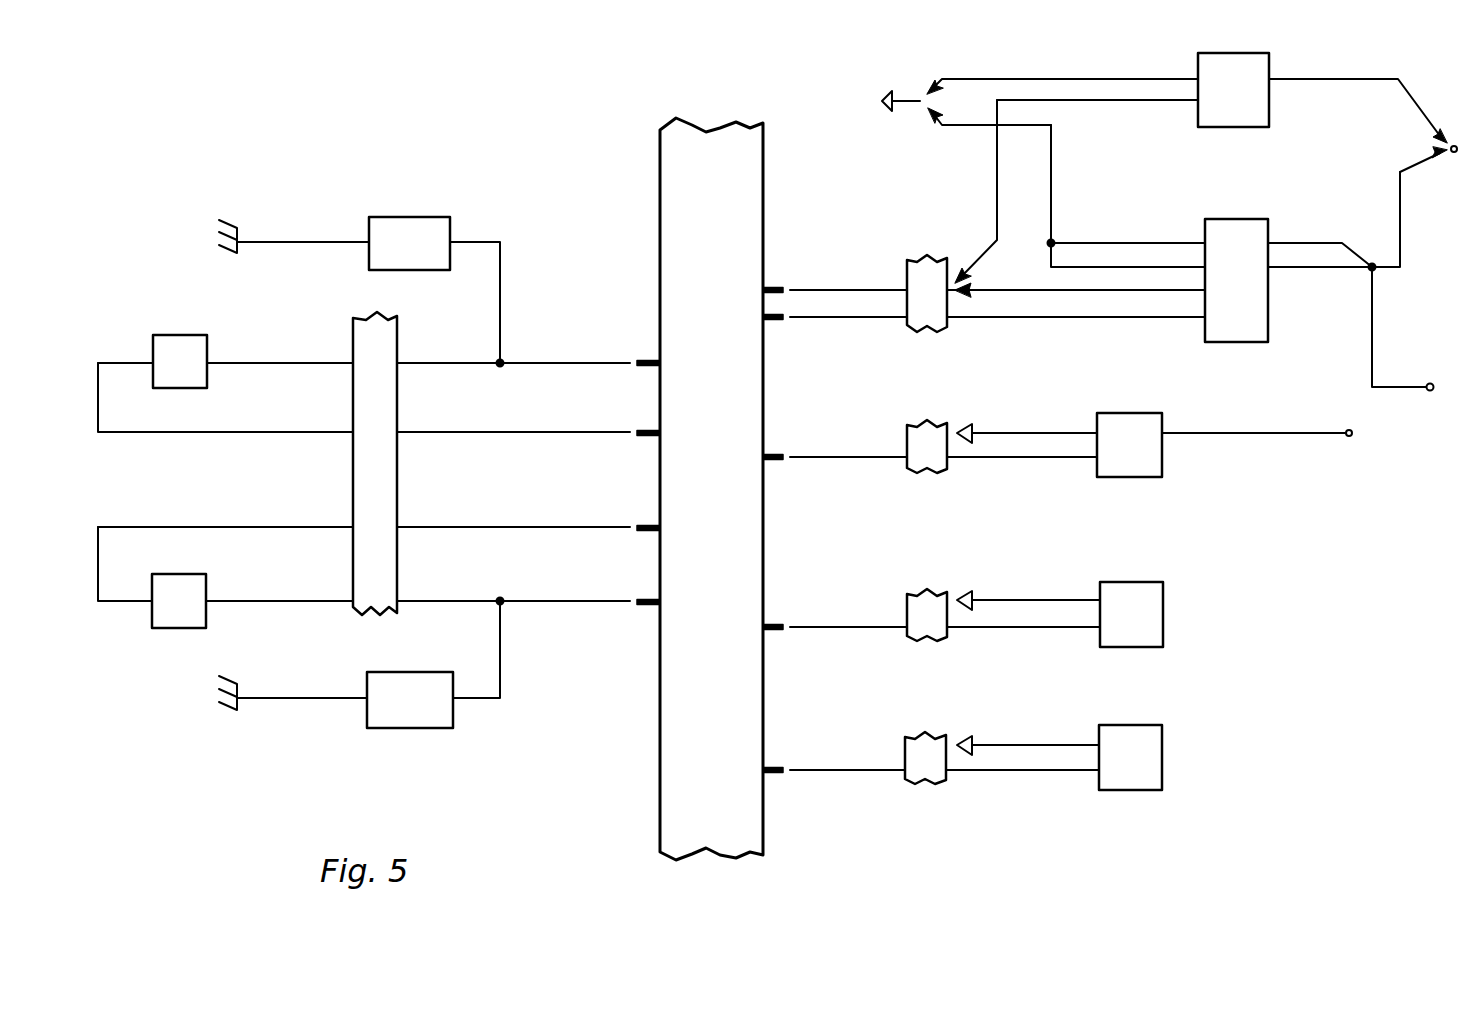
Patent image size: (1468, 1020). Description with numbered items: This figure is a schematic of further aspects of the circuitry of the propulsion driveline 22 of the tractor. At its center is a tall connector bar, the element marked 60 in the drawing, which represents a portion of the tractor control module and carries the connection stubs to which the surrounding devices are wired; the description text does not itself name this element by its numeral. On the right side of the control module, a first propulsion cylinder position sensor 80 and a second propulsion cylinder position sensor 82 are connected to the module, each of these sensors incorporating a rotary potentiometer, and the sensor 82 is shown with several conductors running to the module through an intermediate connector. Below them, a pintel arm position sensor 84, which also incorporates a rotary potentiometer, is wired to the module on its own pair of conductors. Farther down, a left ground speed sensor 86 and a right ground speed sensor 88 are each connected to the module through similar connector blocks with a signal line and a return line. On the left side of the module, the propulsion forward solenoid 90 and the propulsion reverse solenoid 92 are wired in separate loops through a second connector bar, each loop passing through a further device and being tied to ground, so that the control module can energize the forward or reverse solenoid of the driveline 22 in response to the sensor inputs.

The propulsion driveline 22 is at (298, 145).
The controller 60 is at (658, 126).
The propulsion cylinder position sensor 80 is at (1198, 60).
The propulsion cylinder position sensor 82 is at (1215, 219).
The pintel arm position sensor 84 is at (1162, 465).
The left ground speed sensor 86 is at (1163, 625).
The right ground speed sensor 88 is at (1162, 770).
The propulsion forward solenoid 90 is at (207, 377).
The propulsion reverse solenoid 92 is at (163, 628).